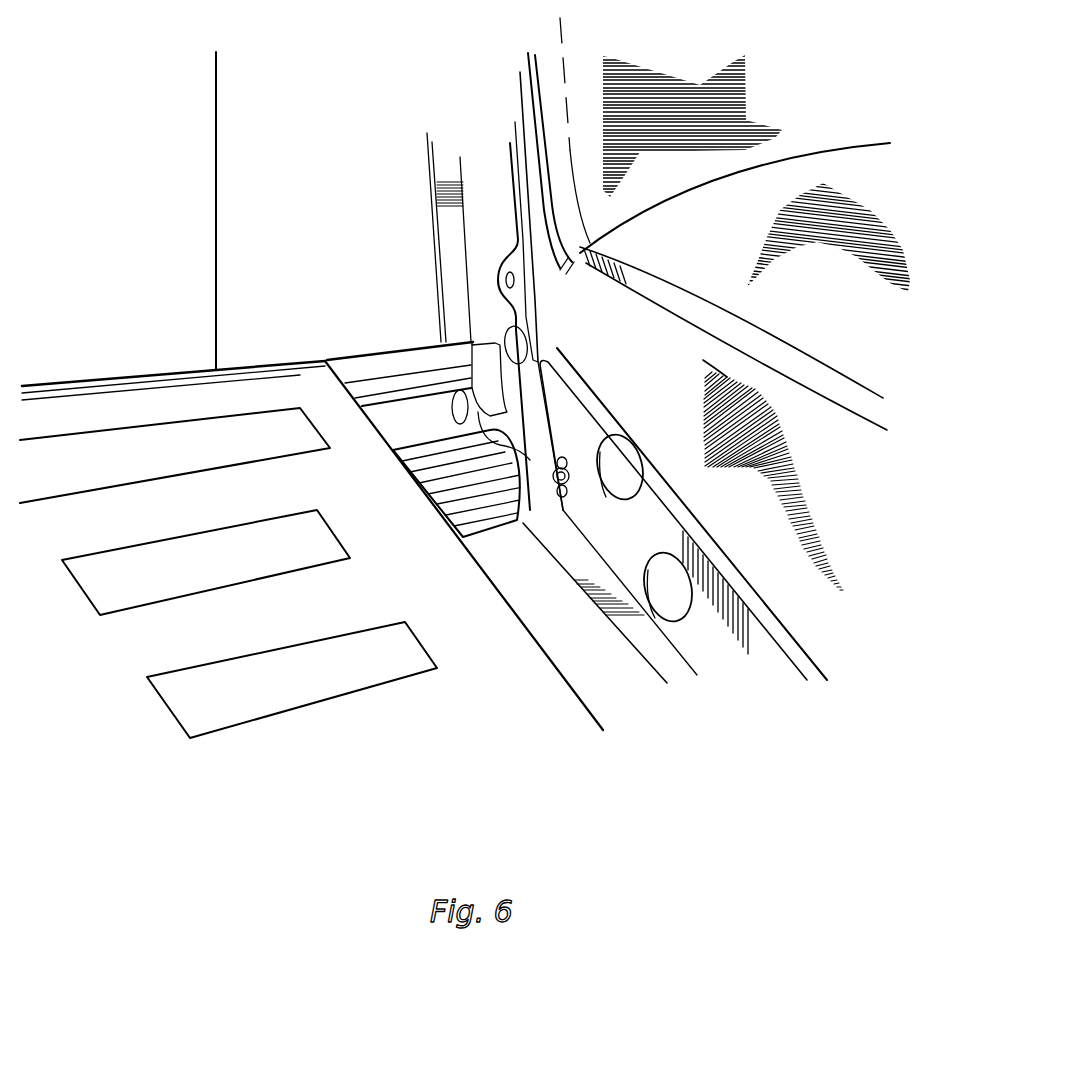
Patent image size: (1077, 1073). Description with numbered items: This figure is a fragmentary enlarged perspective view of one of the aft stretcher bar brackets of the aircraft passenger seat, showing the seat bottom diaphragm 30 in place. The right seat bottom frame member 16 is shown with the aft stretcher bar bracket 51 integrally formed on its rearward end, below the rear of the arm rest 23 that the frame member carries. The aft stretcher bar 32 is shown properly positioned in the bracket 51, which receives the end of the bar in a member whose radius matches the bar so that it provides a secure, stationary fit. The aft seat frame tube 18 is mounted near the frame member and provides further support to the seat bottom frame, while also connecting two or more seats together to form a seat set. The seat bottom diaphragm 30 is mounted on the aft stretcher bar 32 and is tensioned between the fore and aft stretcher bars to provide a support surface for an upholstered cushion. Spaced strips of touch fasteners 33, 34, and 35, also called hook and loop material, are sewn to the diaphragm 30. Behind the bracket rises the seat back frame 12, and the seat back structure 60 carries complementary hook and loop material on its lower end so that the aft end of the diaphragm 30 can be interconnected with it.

The seat back frame 12 is at (412, 172).
The right seat bottom frame member 16 is at (645, 527).
The aft seat frame tube 18 is at (480, 507).
The arm rest 23 is at (745, 205).
The seat bottom diaphragm 30 is at (622, 709).
The aft stretcher bar 32 is at (410, 360).
The strip of touch fastener 33 is at (327, 680).
The strip of touch fastener 34 is at (300, 550).
The strip of touch fastener 35 is at (97, 465).
The aft stretcher bar bracket 51 is at (497, 363).
The seat back structure 60 is at (106, 250).